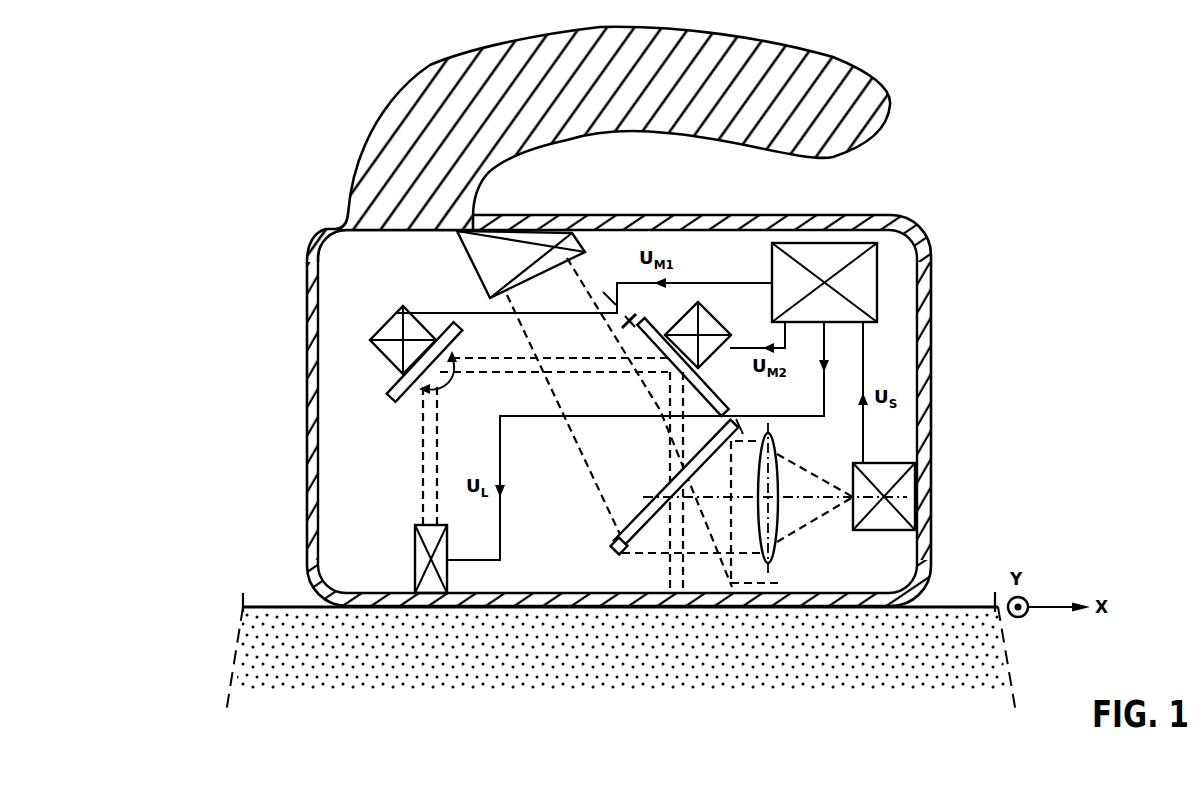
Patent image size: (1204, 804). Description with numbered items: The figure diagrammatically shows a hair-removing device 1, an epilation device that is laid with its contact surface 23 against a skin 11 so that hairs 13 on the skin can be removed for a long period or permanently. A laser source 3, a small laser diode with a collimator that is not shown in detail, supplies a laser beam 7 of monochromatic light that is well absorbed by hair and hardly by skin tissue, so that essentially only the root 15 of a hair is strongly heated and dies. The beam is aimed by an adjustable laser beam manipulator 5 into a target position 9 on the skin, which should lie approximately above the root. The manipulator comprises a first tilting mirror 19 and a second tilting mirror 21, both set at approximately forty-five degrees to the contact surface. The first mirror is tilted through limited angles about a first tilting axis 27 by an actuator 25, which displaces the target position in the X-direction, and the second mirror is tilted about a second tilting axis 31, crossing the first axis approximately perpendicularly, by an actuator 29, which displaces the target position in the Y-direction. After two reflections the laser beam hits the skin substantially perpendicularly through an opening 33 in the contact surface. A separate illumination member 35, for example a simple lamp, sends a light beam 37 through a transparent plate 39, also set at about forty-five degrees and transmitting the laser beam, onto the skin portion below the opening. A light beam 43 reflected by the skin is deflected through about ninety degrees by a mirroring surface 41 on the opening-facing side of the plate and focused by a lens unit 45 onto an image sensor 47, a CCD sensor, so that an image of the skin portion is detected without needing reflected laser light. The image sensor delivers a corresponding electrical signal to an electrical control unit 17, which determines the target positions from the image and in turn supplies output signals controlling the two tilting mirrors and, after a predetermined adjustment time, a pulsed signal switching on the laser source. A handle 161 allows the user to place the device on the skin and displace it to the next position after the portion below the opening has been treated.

The hair-removing device 1 is at (188, 551).
The laser source 3 is at (415, 548).
The laser beam manipulator 5 is at (360, 333).
The laser beam 7 is at (423, 483).
The target position 9 is at (680, 595).
The skin 11 is at (978, 606).
The hair 13 is at (267, 620).
The root 15 is at (688, 590).
The control unit 17 is at (772, 260).
The first tilting mirror 19 is at (394, 401).
The second tilting mirror 21 is at (716, 398).
The contact surface 23 is at (527, 603).
The actuator 25 is at (393, 313).
The first tilting axis 27 is at (445, 386).
The actuator 29 is at (718, 326).
The second tilting axis 31 is at (638, 318).
The opening 33 is at (720, 604).
The illumination member 35 is at (474, 258).
The light beam 37 is at (586, 457).
The transparent plate 39 is at (612, 545).
The mirroring surface 41 is at (647, 512).
The reflected light beam 43 is at (737, 516).
The lens unit 45 is at (779, 463).
The image sensor 47 is at (912, 482).
The handle 161 is at (843, 67).